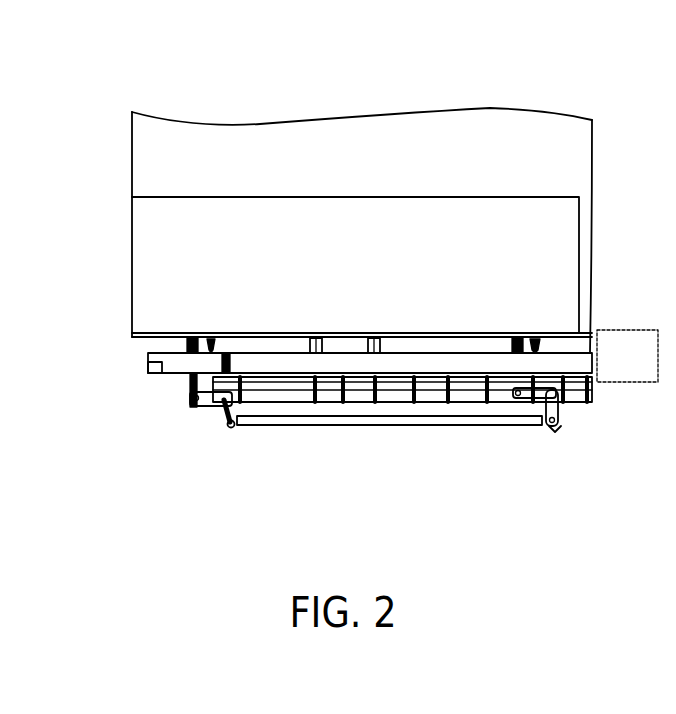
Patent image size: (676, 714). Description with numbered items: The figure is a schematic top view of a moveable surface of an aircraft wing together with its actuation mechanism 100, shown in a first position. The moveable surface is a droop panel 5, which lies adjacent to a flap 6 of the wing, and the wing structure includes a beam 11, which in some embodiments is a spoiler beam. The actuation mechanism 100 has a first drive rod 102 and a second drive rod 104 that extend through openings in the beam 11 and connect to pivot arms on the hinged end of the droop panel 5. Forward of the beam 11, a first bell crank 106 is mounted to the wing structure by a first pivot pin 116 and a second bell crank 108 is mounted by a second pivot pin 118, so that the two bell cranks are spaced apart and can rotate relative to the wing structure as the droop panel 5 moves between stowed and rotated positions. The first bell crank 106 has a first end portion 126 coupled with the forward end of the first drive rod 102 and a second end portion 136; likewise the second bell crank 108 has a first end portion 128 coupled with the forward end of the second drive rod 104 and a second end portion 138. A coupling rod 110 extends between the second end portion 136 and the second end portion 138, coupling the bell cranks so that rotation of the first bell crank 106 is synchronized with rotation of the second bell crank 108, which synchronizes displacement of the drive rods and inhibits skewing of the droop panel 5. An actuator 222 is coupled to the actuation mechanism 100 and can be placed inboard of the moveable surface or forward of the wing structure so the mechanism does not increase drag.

The droop panel 5 is at (453, 218).
The flap 6 is at (293, 143).
The beam 11 is at (150, 363).
The actuation mechanism 100 is at (150, 503).
The first drive rod 102 is at (173, 373).
The second drive rod 104 is at (537, 334).
The first bell crank 106 is at (228, 416).
The second bell crank 108 is at (560, 402).
The coupling rod 110 is at (415, 421).
The first pivot pin 116 is at (225, 398).
The second pivot pin 118 is at (550, 424).
The first end portion 126 is at (175, 404).
The first end portion 128 is at (507, 403).
The second end portion 136 is at (248, 448).
The second end portion 138 is at (556, 438).
The actuator 222 is at (641, 376).